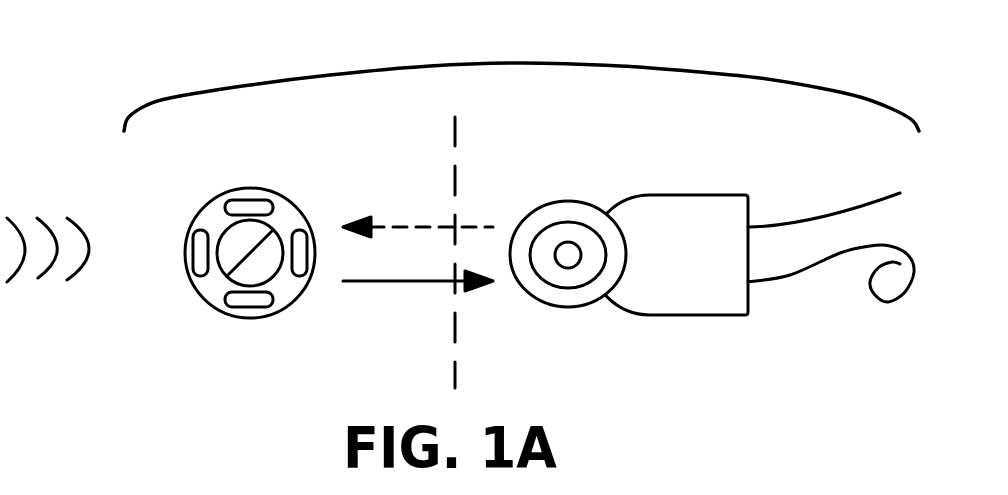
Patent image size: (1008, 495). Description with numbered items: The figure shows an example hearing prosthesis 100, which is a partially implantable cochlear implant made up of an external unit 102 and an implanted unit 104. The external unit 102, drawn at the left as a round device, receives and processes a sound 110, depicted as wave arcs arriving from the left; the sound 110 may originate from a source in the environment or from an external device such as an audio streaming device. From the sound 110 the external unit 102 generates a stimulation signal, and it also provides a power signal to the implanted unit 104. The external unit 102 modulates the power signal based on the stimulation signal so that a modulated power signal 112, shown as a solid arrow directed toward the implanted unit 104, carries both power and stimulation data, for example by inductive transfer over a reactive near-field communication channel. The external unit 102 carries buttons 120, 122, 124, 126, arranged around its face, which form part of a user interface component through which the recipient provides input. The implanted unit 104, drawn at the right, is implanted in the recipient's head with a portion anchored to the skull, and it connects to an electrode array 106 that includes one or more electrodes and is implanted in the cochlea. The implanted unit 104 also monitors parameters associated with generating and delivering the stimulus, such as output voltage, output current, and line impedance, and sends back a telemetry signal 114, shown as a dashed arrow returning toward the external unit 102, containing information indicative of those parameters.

The hearing prosthesis 100 is at (522, 63).
The external unit 102 is at (226, 253).
The implanted unit 104 is at (710, 194).
The electrode array 106 is at (807, 272).
The sound 110 is at (50, 280).
The modulated power signal 112 is at (410, 283).
The telemetry signal 114 is at (410, 226).
The button 120 is at (252, 198).
The button 122 is at (295, 221).
The button 124 is at (250, 310).
The button 126 is at (187, 249).